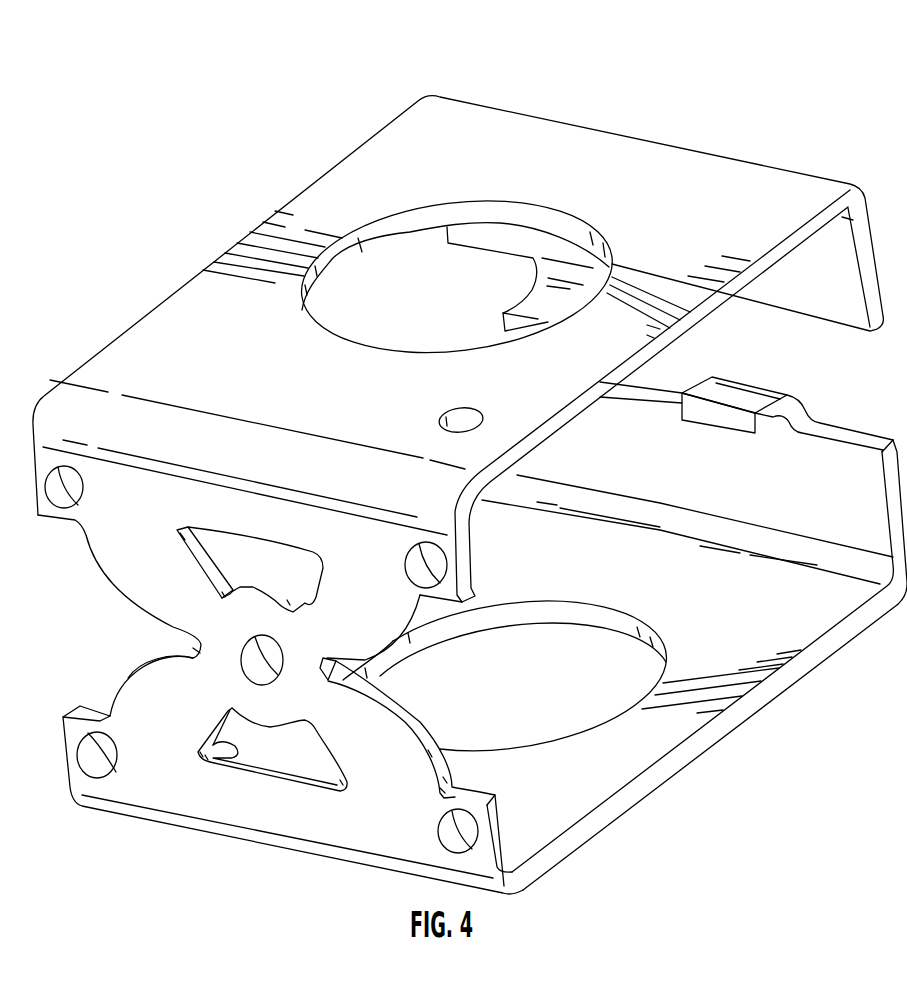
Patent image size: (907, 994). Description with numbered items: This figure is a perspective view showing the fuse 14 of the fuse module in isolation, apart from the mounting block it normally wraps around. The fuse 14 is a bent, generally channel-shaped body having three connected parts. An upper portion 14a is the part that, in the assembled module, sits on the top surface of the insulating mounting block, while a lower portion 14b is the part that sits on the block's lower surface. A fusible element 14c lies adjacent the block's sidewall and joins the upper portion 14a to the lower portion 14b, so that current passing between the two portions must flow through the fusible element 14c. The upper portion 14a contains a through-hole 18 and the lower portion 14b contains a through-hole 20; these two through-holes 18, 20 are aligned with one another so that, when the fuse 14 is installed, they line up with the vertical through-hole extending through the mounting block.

The fuse 14 is at (317, 180).
The upper portion 14a is at (218, 305).
The lower portion 14b is at (683, 726).
The fusible element 14c is at (220, 643).
The through-hole 18 is at (432, 262).
The through-hole 20 is at (560, 718).